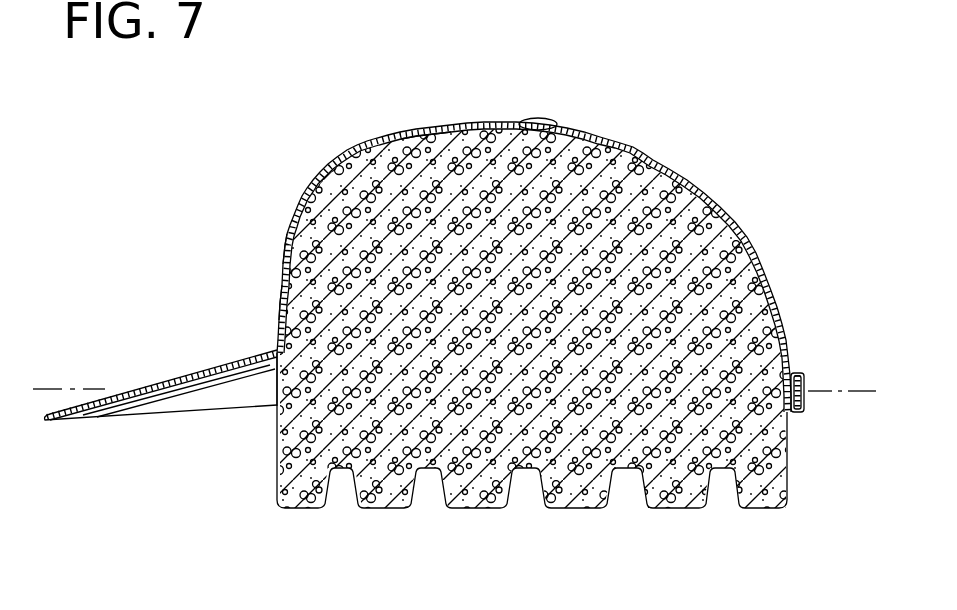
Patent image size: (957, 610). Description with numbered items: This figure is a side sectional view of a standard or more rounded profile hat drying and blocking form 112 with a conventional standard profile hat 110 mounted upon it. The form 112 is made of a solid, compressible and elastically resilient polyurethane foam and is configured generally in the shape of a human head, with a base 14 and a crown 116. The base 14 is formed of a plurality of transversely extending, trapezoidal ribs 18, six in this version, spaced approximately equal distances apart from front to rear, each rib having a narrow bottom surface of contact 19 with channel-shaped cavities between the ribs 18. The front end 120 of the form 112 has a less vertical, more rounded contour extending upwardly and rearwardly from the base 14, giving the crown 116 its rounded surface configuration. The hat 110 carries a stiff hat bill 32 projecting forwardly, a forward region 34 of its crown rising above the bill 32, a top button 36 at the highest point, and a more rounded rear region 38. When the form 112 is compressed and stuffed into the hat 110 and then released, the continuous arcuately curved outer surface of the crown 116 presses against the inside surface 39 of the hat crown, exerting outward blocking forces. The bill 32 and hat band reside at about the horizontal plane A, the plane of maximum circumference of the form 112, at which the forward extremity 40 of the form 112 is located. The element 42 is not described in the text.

The standard profile hat 110 is at (738, 195).
The hat drying and blocking form 112 is at (198, 490).
The crown 116 is at (606, 183).
The front end 120 is at (274, 297).
The base 14 is at (793, 484).
The ribs 18 is at (300, 494).
The bottom surface of contact 19 is at (467, 510).
The hat bill 32 is at (158, 382).
The forward region 34 is at (272, 314).
The top button 36 is at (540, 118).
The rear region 38 is at (785, 310).
The inside surface 39 is at (445, 152).
The forward extremity 40 is at (278, 363).
The stopper / end piece 42 is at (805, 392).
The horizontal plane A is at (828, 390).